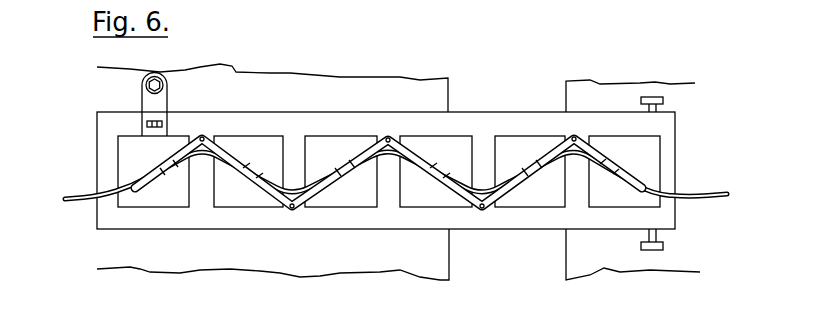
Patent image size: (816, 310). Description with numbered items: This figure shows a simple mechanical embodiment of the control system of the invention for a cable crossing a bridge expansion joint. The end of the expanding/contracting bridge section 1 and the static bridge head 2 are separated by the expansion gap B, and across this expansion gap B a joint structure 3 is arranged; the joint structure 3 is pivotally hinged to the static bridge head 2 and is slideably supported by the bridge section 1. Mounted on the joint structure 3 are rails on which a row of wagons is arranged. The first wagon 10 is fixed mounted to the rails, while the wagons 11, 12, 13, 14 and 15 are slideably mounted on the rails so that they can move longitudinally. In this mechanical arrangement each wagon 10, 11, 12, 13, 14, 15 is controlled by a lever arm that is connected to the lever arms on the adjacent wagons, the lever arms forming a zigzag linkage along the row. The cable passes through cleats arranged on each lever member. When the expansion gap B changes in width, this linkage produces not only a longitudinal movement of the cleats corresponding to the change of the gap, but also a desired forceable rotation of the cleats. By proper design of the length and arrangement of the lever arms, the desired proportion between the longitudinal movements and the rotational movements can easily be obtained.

The expanding/contracting bridge section 1 is at (207, 263).
The static bridge head 2 is at (610, 265).
The joint structure 3 is at (207, 222).
The first wagon 10 is at (624, 171).
The wagon 11 is at (530, 171).
The wagon 12 is at (436, 171).
The wagon 13 is at (341, 171).
The wagon 14 is at (248, 171).
The wagon 15 is at (153, 171).
The expansion gap B is at (396, 213).